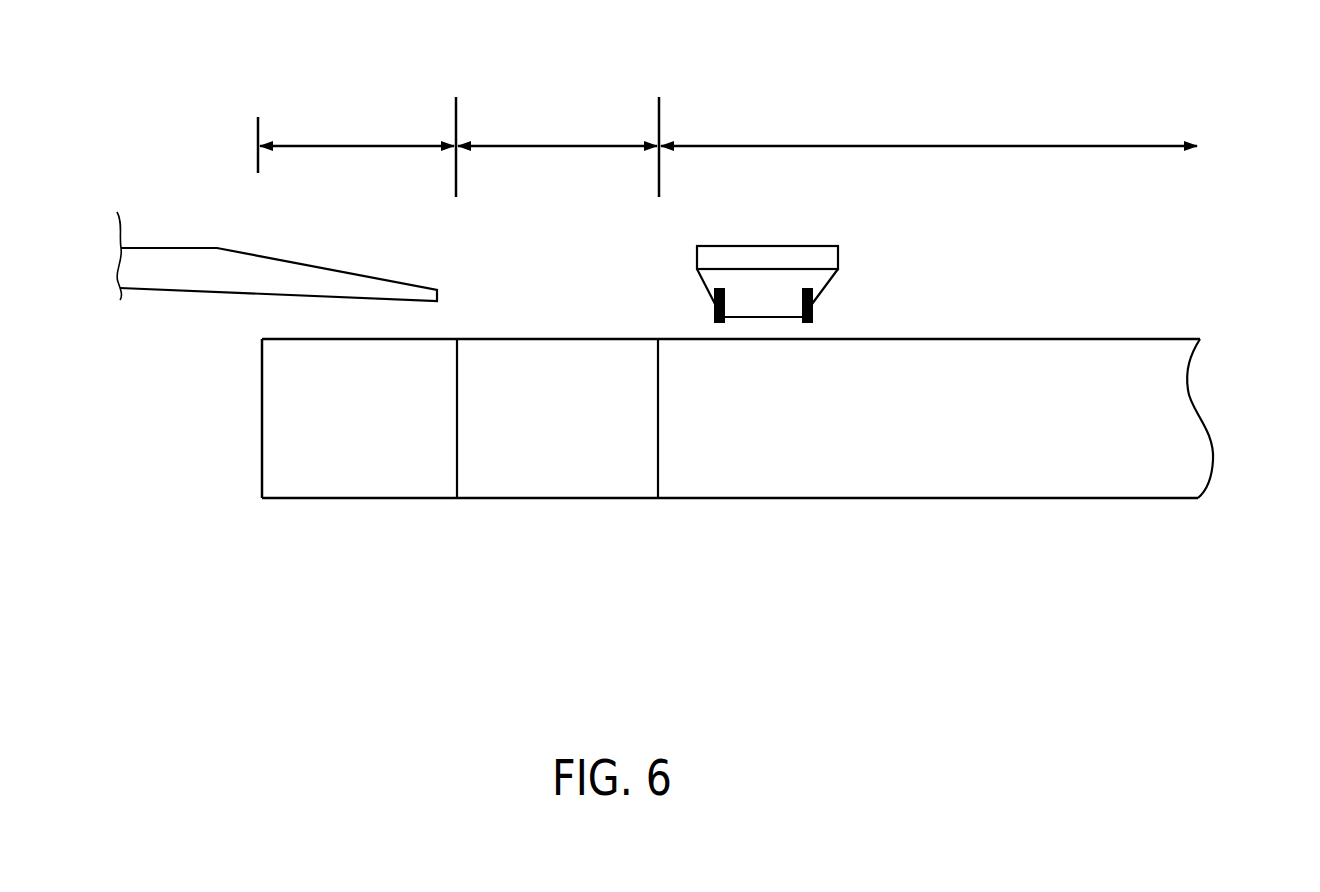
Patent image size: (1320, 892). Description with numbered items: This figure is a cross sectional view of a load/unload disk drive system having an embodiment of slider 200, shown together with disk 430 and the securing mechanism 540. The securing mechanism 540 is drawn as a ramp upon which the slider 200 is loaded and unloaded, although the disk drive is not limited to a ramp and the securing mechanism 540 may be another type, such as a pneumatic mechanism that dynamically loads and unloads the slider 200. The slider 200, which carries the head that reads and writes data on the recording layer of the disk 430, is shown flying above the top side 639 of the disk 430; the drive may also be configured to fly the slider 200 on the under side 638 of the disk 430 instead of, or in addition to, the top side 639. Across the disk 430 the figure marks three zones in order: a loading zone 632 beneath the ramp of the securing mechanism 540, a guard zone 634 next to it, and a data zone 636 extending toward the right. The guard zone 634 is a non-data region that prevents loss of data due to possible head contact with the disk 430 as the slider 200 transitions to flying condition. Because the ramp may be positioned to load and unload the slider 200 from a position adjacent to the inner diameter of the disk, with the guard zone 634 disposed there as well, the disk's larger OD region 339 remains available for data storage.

The loading zone 632 is at (355, 143).
The guard zone 634 is at (570, 143).
The data zone 636 is at (880, 145).
The securing mechanism 540 is at (183, 262).
The slider 200 is at (840, 270).
The disk 430 is at (774, 445).
The top side 639 is at (1189, 311).
The under side 638 is at (951, 514).
The OD region 339 is at (383, 483).